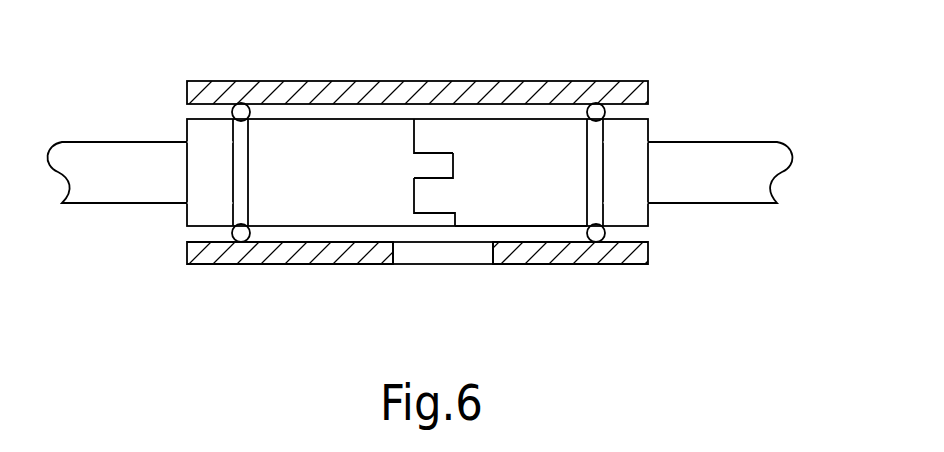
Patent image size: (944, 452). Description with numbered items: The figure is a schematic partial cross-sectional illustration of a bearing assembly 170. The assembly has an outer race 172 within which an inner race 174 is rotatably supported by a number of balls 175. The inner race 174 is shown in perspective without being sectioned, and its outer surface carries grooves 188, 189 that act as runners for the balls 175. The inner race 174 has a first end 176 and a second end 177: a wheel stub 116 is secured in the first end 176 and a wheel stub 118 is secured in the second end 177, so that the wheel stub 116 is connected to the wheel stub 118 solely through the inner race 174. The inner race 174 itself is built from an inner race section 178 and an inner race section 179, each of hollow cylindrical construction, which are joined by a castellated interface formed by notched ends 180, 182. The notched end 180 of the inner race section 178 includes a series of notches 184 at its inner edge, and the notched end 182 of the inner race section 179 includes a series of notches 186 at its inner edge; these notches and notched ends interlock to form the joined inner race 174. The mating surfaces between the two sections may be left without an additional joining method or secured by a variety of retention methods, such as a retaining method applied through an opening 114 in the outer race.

The opening 114 is at (393, 257).
The wheel stub 116 is at (172, 185).
The wheel stub 118 is at (660, 157).
The bearing assembly 170 is at (710, 242).
The outer race 172 is at (513, 250).
The inner race 174 is at (545, 202).
The balls 175 is at (598, 234).
The first end 176 is at (187, 130).
The second end 177 is at (648, 120).
The inner race section 178 is at (211, 192).
The inner race section 179 is at (627, 197).
The notched end 180 is at (457, 170).
The notched end 182 is at (414, 188).
The notches 184 is at (415, 148).
The notches 186 is at (454, 158).
The groove 188 is at (243, 150).
The groove 189 is at (596, 150).